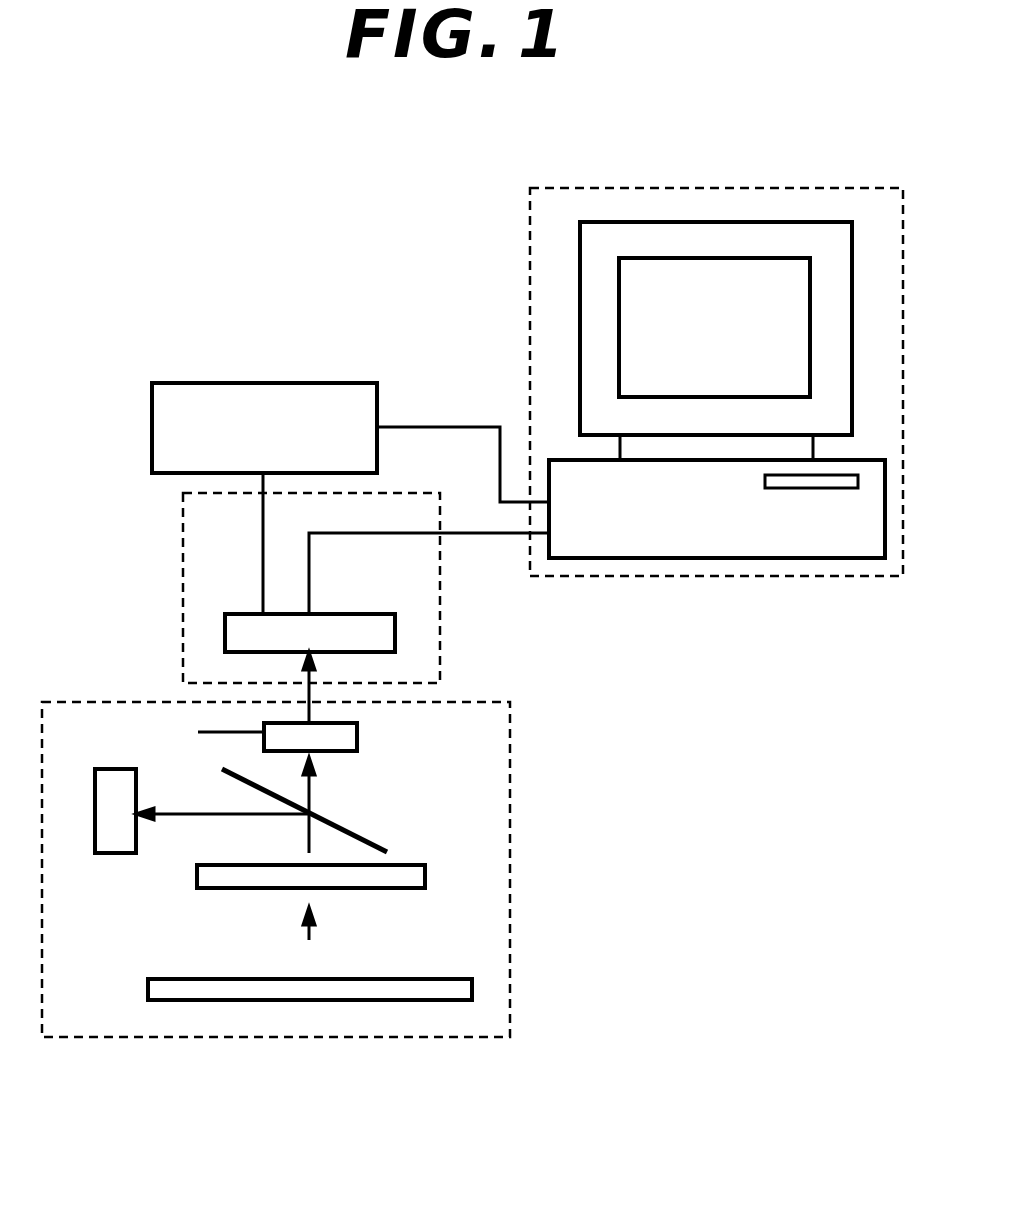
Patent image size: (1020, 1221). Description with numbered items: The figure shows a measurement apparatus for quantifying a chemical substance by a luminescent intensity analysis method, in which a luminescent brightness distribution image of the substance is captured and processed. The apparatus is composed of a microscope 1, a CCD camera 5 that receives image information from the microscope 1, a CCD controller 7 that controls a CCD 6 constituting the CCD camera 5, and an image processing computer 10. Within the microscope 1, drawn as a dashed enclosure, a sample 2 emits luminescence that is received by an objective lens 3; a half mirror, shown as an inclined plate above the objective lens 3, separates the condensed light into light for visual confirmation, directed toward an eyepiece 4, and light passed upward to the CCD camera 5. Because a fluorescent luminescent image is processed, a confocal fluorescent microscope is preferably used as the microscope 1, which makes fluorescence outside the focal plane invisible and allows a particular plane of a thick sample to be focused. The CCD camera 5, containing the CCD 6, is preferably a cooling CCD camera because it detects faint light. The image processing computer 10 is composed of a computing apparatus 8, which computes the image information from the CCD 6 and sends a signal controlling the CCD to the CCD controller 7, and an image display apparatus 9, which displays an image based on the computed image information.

The microscope 1 is at (510, 728).
The sample 2 is at (410, 979).
The objective lens 3 is at (400, 865).
The eyepiece 4 is at (110, 853).
The CCD camera 5 is at (183, 537).
The CCD 6 is at (395, 622).
The CCD controller 7 is at (152, 380).
The computing apparatus 8 is at (885, 478).
The image display apparatus 9 is at (852, 290).
The image processing computer 10 is at (833, 188).